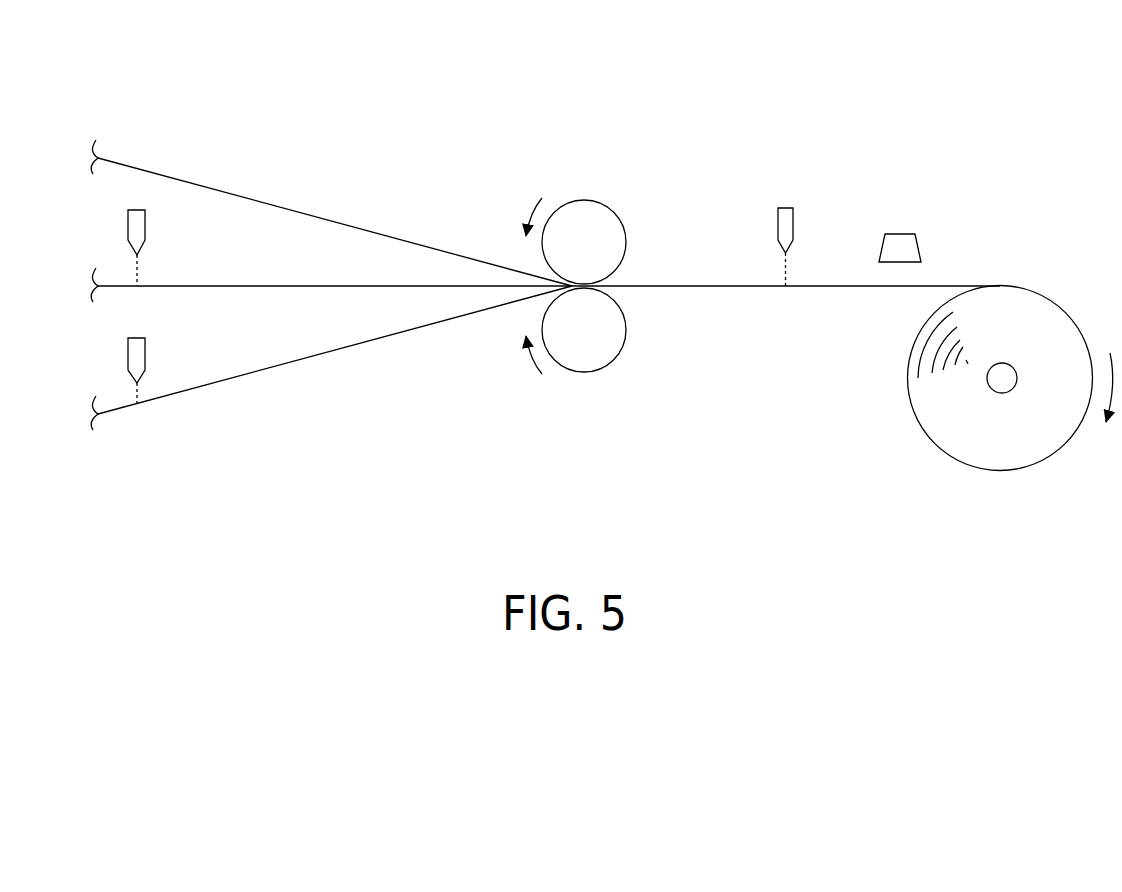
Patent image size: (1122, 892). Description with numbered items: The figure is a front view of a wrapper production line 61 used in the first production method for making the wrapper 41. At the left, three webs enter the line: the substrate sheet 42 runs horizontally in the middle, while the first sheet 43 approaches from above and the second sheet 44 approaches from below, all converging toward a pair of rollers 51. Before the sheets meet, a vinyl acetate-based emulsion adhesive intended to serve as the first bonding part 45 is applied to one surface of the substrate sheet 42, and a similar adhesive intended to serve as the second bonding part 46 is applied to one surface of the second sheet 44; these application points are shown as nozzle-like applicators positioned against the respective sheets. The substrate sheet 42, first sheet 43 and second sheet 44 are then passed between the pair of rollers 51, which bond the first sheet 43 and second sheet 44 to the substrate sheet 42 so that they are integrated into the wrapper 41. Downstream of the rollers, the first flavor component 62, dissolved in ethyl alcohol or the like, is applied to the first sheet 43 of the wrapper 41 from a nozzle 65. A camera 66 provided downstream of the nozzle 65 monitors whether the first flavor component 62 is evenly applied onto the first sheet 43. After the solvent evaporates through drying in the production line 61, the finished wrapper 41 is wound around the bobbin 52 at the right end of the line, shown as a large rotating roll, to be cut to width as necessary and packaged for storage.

The wrapper 41 is at (824, 289).
The substrate sheet 42 is at (290, 284).
The first sheet 43 is at (252, 198).
The second sheet 44 is at (253, 371).
The first bonding part 45 is at (139, 263).
The second bonding part 46 is at (139, 392).
The pair of rollers 51 is at (612, 241).
The bobbin 52 is at (1003, 421).
The wrapper production line 61 is at (734, 128).
The first flavor component 62 is at (788, 268).
The nozzle 65 is at (785, 207).
The camera 66 is at (900, 233).